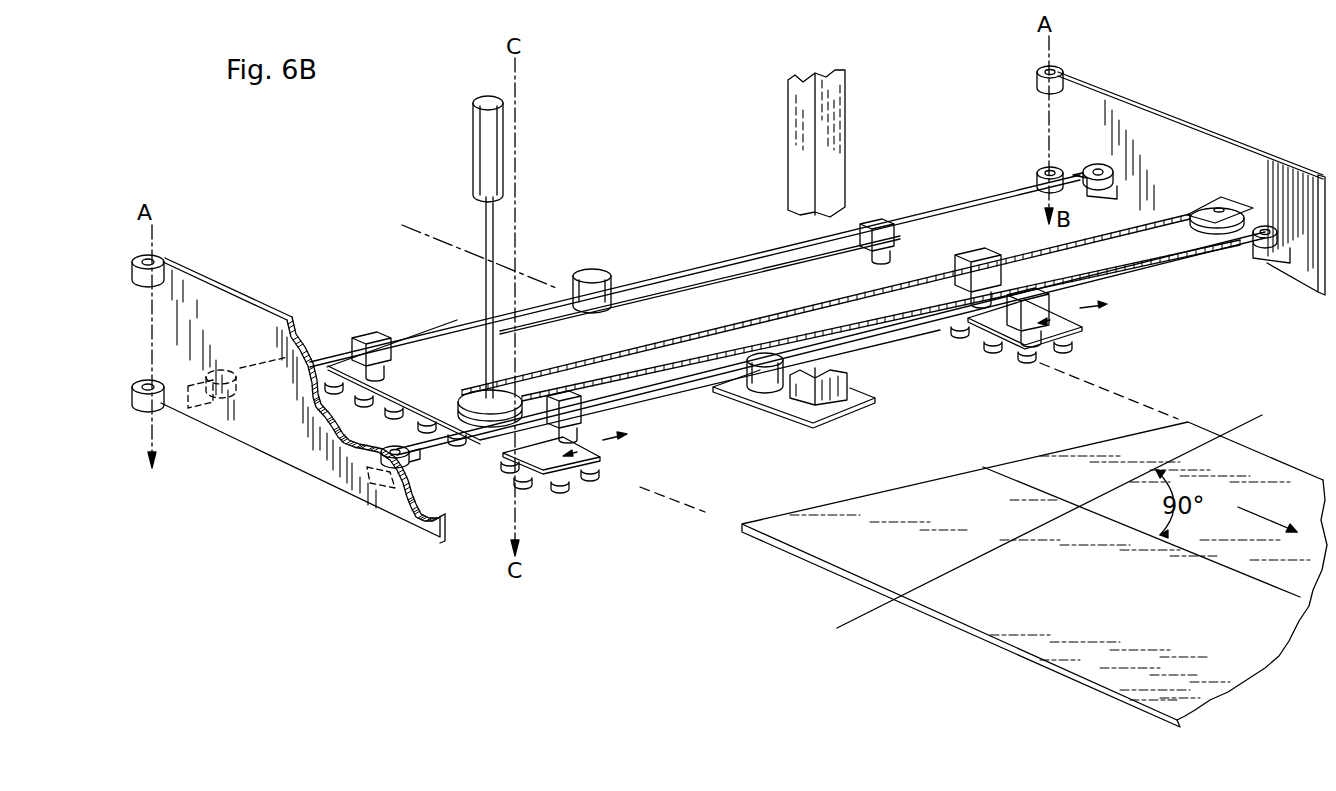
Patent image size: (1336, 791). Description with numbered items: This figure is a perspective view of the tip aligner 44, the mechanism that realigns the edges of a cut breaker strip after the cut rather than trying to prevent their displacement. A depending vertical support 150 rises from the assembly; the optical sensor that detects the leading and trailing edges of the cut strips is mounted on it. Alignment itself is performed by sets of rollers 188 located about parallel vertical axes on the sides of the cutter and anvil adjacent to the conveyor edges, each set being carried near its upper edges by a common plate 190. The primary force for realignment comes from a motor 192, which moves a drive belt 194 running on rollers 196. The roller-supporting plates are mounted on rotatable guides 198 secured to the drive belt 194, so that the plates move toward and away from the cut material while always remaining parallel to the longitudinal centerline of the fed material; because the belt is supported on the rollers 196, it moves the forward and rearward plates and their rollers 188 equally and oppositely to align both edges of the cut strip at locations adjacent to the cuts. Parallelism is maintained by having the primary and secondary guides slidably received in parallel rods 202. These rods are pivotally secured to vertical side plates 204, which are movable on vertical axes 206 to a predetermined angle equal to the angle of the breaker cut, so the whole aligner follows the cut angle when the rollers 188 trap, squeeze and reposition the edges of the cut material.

The tip aligner 44 is at (1163, 111).
The depending vertical support 150 is at (797, 192).
The rollers 188 is at (607, 463).
The common plate 190 is at (563, 477).
The motor 192 is at (458, 247).
The drive belt 194 is at (770, 317).
The rollers 196 is at (482, 390).
The rotatable guides 198 is at (600, 412).
The parallel rods 202 is at (311, 361).
The vertical side plates 204 is at (208, 286).
The vertical axes 206 is at (157, 258).